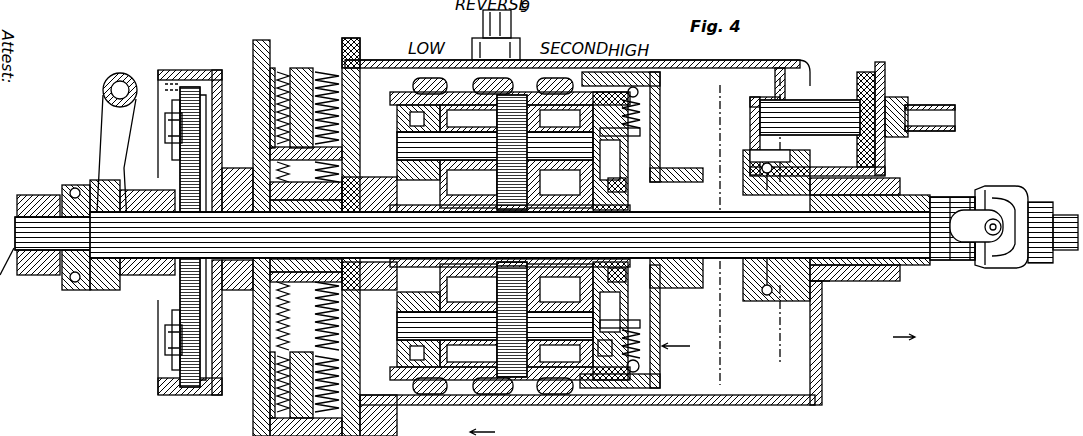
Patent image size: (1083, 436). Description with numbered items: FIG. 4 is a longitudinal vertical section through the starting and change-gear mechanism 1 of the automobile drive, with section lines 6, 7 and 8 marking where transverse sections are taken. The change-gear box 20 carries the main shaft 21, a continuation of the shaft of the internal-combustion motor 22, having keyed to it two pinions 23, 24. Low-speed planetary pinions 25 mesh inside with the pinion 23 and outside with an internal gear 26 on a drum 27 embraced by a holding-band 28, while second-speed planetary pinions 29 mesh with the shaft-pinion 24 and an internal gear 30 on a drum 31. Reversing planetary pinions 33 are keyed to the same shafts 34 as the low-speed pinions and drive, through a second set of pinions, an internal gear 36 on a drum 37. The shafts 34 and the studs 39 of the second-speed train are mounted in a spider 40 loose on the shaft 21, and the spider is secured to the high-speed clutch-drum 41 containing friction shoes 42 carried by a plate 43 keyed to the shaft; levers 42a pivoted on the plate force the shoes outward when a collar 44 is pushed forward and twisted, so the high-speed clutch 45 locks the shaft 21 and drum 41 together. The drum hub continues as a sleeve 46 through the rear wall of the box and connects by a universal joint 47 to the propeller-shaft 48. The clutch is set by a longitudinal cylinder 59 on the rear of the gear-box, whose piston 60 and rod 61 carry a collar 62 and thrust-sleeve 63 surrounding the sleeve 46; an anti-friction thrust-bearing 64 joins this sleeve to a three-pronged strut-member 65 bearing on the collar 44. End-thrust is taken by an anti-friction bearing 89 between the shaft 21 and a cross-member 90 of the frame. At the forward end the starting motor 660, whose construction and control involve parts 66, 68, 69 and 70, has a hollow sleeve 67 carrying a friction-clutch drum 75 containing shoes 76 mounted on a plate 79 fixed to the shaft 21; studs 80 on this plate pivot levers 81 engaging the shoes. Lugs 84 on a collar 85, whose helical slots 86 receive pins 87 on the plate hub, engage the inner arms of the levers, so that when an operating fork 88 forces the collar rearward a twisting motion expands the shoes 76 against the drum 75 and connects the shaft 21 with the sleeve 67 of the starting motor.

The transmission 1 is at (7, 261).
The section line 6 is at (719, 230).
The section line 7 is at (780, 224).
The section line 8 is at (305, 66).
The change-gear box 20 is at (822, 360).
The shaft 21 is at (850, 268).
The internal-combustion motor 22 is at (532, 324).
The pinion 23 is at (398, 200).
The pinion 24 is at (648, 166).
The planetary pinions 25 is at (397, 112).
The internal gear 26 is at (400, 358).
The drum 27 is at (478, 378).
The holding-band 28 is at (420, 394).
The second-speed planetary pinions 29 is at (575, 95).
The internal gear 30 is at (583, 392).
The drum 31 is at (575, 385).
The reversing planetary pinions 33 is at (470, 82).
The shafts 34 is at (404, 150).
The internal gear 36 is at (504, 392).
The drum 37 is at (468, 392).
The studs 39 is at (621, 229).
The spider 40 is at (516, 236).
The high-speed clutch-drum 41 is at (660, 100).
The friction shoes 42 is at (660, 368).
The levers 42a is at (660, 170).
The plate 43 is at (611, 354).
The collar 44 is at (668, 282).
The high-speed clutch 45 is at (676, 346).
The sleeve 46 is at (936, 262).
The universal joint 47 is at (975, 196).
The propeller-shaft 48 is at (1058, 262).
The longitudinal cylinder 59 is at (884, 70).
The piston 60 is at (868, 70).
The piston rod 61 is at (830, 100).
The collar 62 is at (765, 155).
The thrust-sleeve 63 is at (818, 283).
The anti-friction thrust-bearing 64 is at (770, 300).
The three-pronged strut-member 65 is at (760, 180).
The starting-motor component 66 is at (270, 46).
The hollow shaft or sleeve 67 is at (237, 168).
The starting-motor component 68 is at (303, 282).
The starting-motor component 69 is at (253, 78).
The starting-motor component 70 is at (320, 342).
The friction-clutch drum 75 is at (170, 70).
The shoes 76 is at (158, 382).
The plate 79 is at (182, 288).
The studs 80 is at (166, 340).
The levers 81 is at (176, 310).
The lugs 84 is at (178, 192).
The collar 85 is at (140, 192).
The helical slots 86 is at (108, 290).
The pins 87 is at (160, 244).
The operating fork 88 is at (104, 115).
The anti-friction bearing 89 is at (74, 284).
The cross-member 90 is at (36, 194).
The starting motor 660 is at (233, 427).